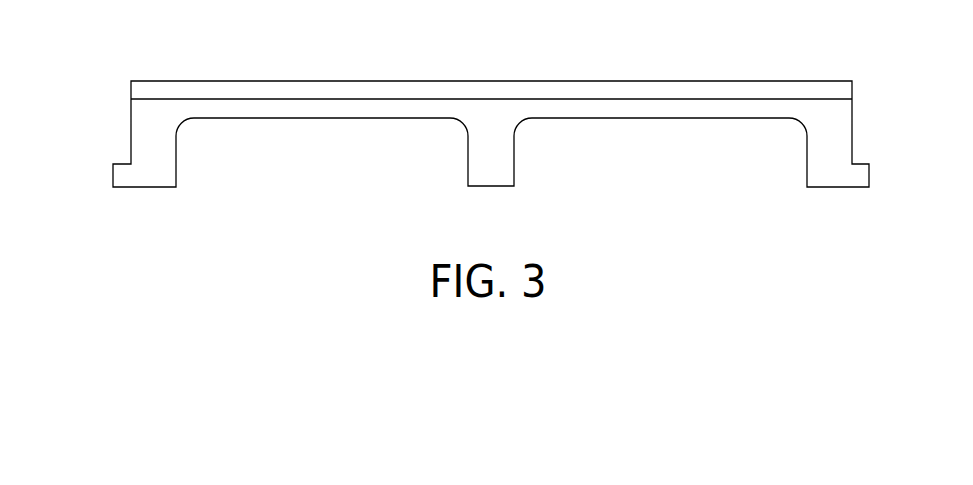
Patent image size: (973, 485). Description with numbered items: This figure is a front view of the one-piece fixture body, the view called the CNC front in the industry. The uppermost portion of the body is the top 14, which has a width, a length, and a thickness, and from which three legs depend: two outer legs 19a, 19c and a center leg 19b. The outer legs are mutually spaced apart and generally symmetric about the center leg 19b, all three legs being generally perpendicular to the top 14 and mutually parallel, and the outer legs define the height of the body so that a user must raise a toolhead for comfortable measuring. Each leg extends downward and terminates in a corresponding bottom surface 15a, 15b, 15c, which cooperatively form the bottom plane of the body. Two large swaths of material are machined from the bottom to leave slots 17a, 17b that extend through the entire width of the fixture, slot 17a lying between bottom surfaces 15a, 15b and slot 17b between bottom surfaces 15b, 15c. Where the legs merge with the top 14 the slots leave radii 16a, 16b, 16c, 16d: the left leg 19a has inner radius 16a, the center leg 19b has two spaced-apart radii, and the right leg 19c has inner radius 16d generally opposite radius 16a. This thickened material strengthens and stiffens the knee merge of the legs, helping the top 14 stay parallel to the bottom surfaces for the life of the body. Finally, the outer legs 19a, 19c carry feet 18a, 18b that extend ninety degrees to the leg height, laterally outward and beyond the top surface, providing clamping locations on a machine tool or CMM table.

The top 14 is at (492, 80).
The bottom surface 15a is at (138, 187).
The bottom surface 15b is at (483, 187).
The bottom surface 15c is at (857, 188).
The inner radius 16a is at (183, 123).
The radius 16b is at (460, 125).
The radius 16c is at (522, 125).
The inner radius 16d is at (797, 126).
The slot 17a is at (323, 121).
The slot 17b is at (661, 121).
The foot 18a is at (118, 158).
The foot 18b is at (864, 159).
The outer leg 19a is at (130, 112).
The center leg 19b is at (497, 172).
The outer leg 19c is at (855, 112).